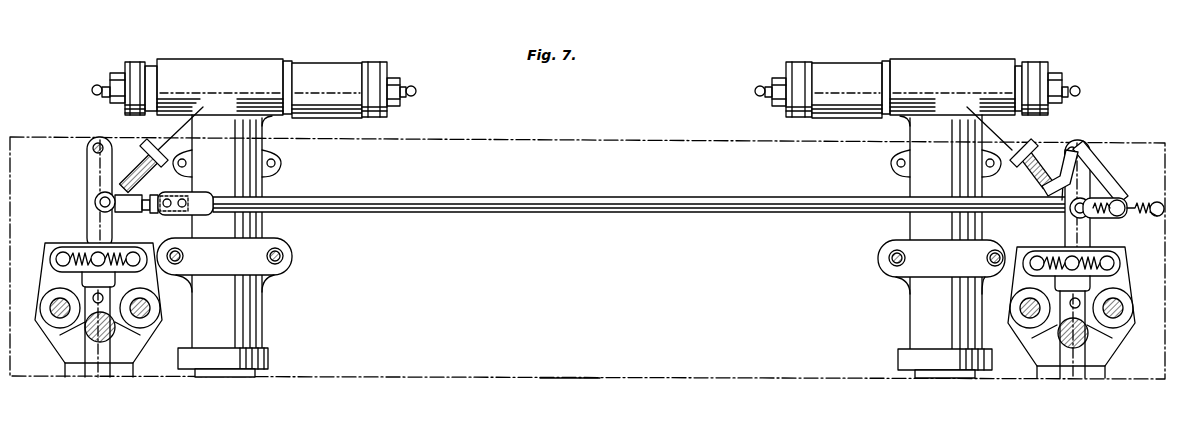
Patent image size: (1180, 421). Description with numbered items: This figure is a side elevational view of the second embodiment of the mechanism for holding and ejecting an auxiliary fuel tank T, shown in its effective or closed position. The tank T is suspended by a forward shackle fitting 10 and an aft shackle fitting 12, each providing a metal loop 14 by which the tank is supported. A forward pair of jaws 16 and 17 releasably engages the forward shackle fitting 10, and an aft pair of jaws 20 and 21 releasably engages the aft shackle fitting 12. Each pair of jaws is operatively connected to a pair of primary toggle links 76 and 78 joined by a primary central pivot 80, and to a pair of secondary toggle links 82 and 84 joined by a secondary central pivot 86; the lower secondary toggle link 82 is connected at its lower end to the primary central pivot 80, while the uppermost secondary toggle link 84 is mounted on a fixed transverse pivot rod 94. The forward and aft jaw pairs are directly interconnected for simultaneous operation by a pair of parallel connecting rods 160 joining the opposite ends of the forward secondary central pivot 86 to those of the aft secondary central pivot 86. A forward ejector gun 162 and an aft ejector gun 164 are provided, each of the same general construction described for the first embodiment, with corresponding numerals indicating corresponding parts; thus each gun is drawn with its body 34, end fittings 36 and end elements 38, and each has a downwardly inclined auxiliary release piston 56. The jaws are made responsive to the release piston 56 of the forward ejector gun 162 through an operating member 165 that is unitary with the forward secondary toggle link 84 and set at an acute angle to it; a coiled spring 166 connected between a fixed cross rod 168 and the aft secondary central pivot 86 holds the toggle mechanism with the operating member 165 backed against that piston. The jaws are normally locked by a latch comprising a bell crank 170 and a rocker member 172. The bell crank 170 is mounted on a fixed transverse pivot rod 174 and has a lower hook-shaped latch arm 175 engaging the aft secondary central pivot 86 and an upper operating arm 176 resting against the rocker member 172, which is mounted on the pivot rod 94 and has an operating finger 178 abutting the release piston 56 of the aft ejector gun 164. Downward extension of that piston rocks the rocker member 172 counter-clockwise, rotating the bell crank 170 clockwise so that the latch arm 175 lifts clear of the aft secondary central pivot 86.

The forward shackle fitting 10 is at (85, 376).
The aft shackle fitting 12 is at (1062, 378).
The metal loop 14 is at (64, 343).
The forward jaw 16 is at (65, 366).
The forward jaw 17 is at (127, 366).
The aft jaw 20 is at (1042, 369).
The aft jaw 21 is at (1105, 369).
The valve body 34 is at (201, 60).
The coupling nut 36 is at (133, 63).
The ball fitting 38 is at (97, 84).
The auxiliary release piston 56 is at (142, 172).
The primary toggle link 76 is at (72, 252).
The primary toggle link 78 is at (121, 254).
The primary central pivot 80 is at (586, 272).
The secondary toggle link 82 is at (86, 220).
The secondary toggle link 84 is at (88, 161).
The secondary central pivot 86 is at (96, 202).
The fixed pivot rod 94 is at (96, 144).
The connecting rod 160 is at (583, 199).
The forward ejector gun 162 is at (266, 310).
The aft ejector gun 164 is at (904, 312).
The operating member 165 is at (146, 148).
The coiled spring 166 is at (1141, 207).
The fixed cross rod 168 is at (1122, 215).
The bell crank 170 is at (1120, 202).
The rocker member 172 is at (1085, 148).
The fixed transverse pivot rod 174 is at (1121, 219).
The hook-shaped latch arm 175 is at (1104, 204).
The upper operating arm 176 is at (1100, 174).
The operating finger 178 is at (1050, 186).
The auxiliary fuel tank T is at (559, 377).